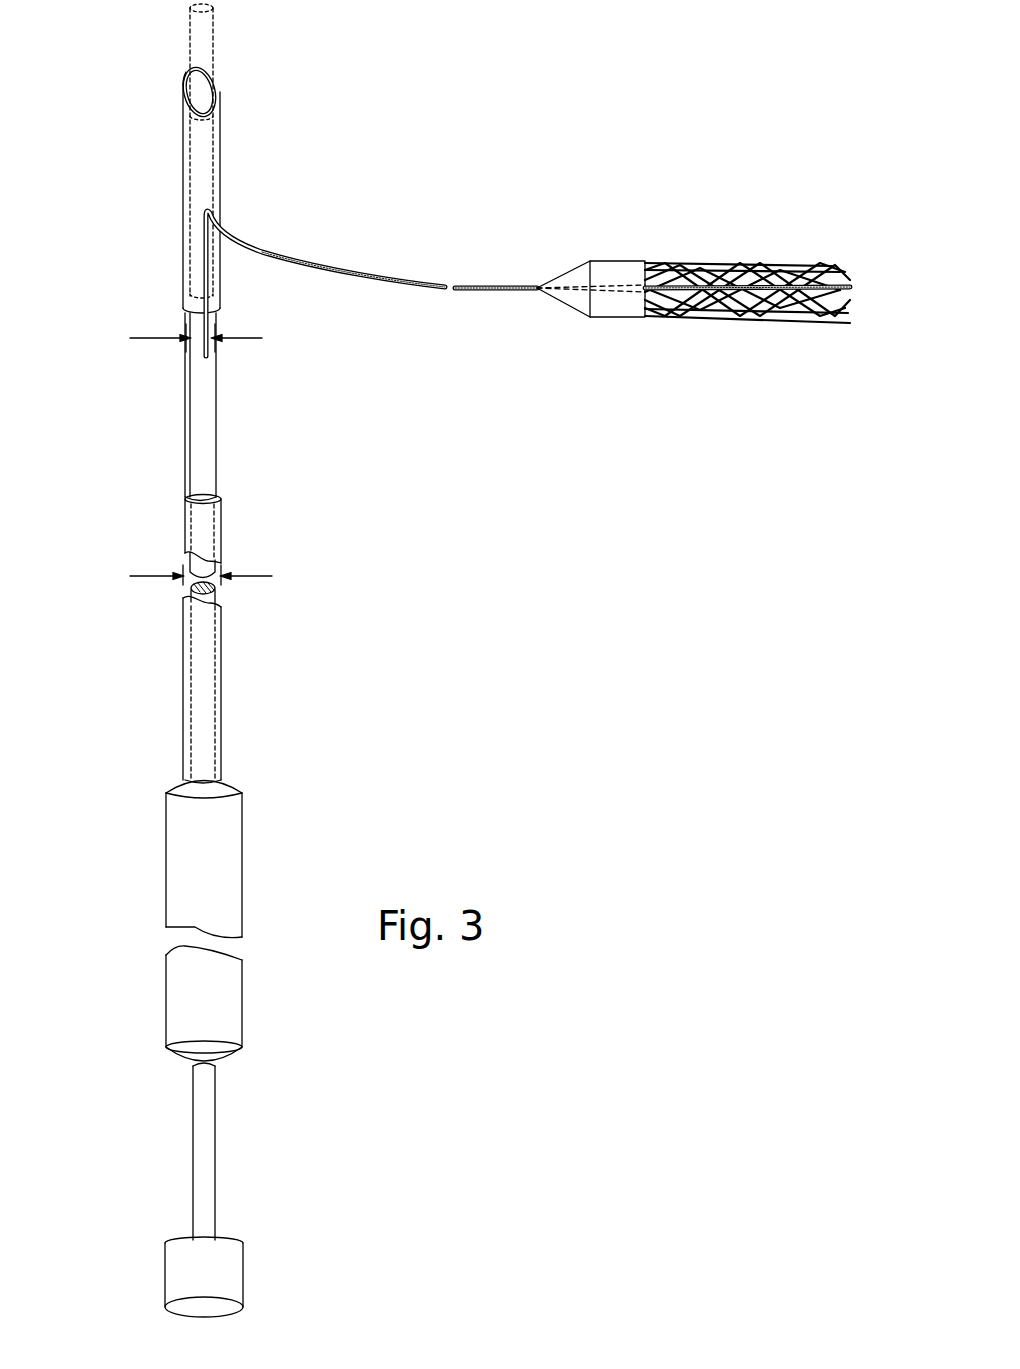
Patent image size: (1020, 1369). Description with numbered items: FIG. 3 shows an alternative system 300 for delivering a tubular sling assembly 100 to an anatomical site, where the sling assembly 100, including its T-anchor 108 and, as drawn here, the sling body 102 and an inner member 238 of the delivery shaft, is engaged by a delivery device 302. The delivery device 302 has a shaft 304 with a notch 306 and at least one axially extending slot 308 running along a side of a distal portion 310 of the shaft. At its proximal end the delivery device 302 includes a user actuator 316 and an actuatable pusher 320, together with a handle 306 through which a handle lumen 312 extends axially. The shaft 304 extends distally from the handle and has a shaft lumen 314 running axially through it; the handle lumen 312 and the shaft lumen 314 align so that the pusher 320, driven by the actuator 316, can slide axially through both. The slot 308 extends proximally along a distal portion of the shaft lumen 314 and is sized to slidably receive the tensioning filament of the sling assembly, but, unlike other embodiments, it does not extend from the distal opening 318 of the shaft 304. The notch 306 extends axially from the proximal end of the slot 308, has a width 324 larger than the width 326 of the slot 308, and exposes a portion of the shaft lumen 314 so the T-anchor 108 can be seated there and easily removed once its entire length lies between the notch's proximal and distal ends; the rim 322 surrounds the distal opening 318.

The tubular sling assembly 100 is at (634, 230).
The stent 102 is at (712, 262).
The T-anchor 108 is at (218, 148).
The inner tube 238 is at (213, 38).
The system 300 is at (110, 494).
The delivery device 302 is at (244, 765).
The shaft 304 is at (183, 407).
The notch 306 is at (213, 497).
The axially extending slot 308 is at (205, 262).
The distal portion 310 is at (170, 172).
The handle lumen 312 is at (182, 993).
The shaft lumen 314 is at (190, 710).
The user actuator 316 is at (180, 1270).
The distal opening 318 is at (205, 95).
The actuatable pusher 320 is at (200, 1150).
The rim 322 is at (184, 82).
The width of notch 324 is at (148, 577).
The width of slot 326 is at (170, 337).